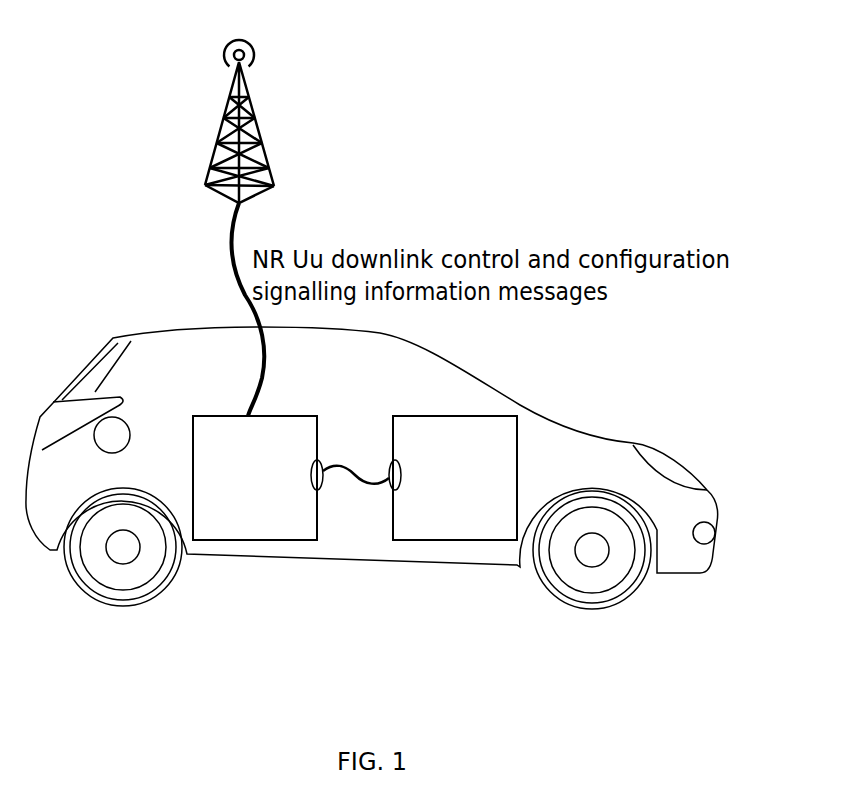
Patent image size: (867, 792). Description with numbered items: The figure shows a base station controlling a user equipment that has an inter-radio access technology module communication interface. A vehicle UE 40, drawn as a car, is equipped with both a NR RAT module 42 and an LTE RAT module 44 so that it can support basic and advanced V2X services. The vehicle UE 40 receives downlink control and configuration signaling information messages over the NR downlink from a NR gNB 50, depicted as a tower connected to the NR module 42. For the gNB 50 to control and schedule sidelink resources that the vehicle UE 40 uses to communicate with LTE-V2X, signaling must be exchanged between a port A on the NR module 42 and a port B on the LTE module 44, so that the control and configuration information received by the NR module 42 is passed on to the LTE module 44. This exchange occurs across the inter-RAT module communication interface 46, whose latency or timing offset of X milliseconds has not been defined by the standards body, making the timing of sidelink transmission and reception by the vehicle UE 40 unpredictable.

The 5G-NR gNB 50 is at (197, 136).
The vehicle UE 40 is at (162, 310).
The NR RAT module 42 is at (268, 524).
The LTE RAT module 44 is at (470, 524).
The inter-RAT module communication interface 46 is at (363, 482).